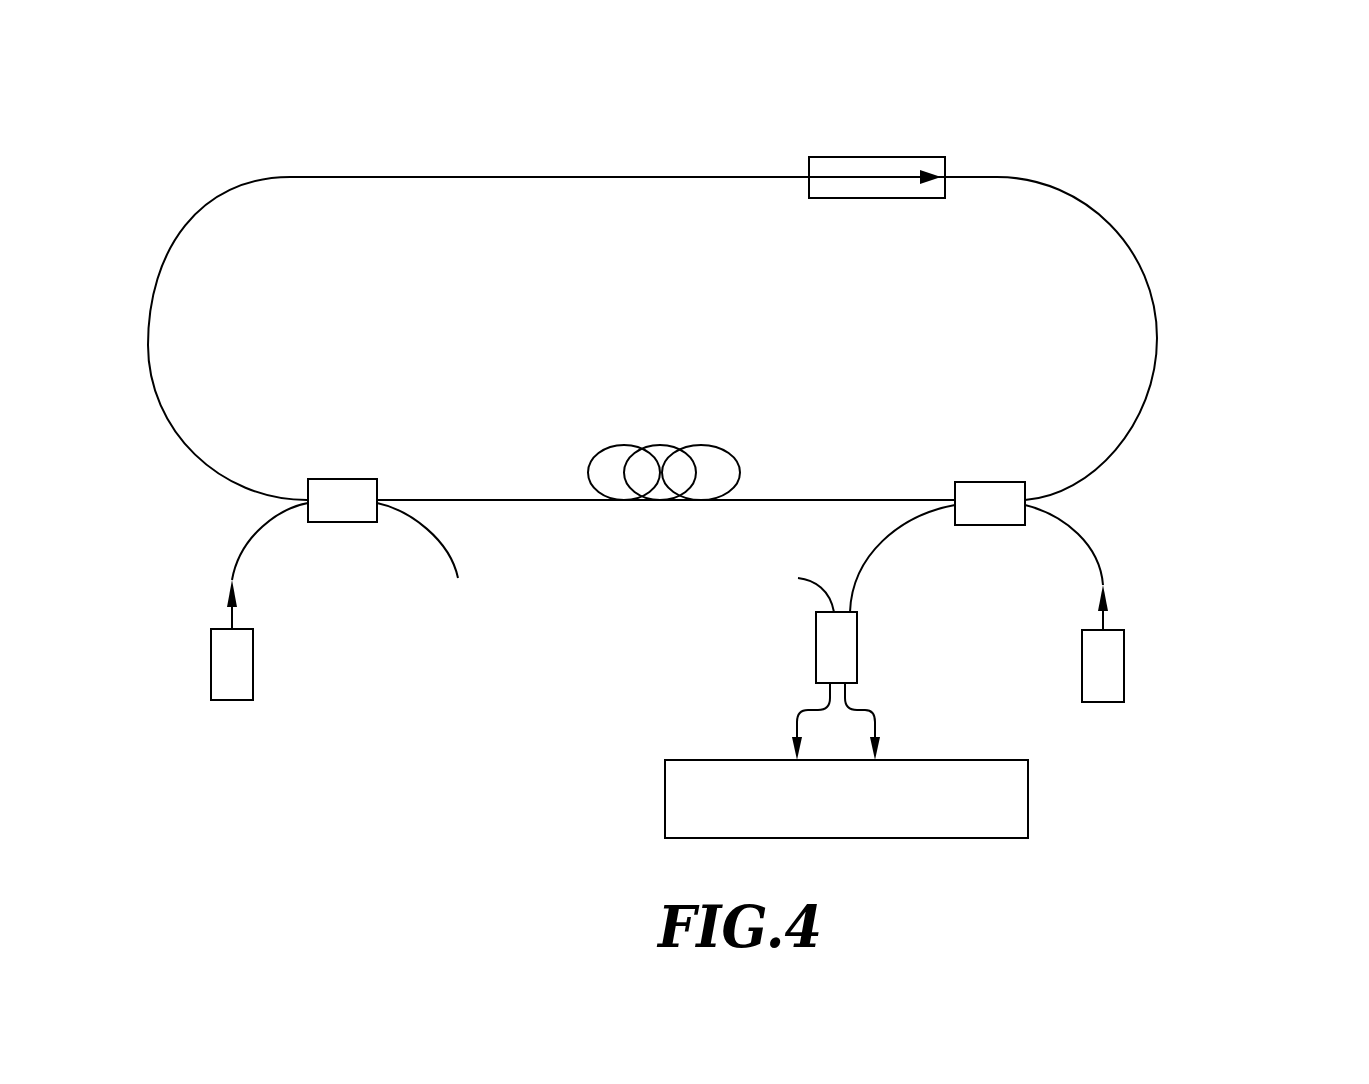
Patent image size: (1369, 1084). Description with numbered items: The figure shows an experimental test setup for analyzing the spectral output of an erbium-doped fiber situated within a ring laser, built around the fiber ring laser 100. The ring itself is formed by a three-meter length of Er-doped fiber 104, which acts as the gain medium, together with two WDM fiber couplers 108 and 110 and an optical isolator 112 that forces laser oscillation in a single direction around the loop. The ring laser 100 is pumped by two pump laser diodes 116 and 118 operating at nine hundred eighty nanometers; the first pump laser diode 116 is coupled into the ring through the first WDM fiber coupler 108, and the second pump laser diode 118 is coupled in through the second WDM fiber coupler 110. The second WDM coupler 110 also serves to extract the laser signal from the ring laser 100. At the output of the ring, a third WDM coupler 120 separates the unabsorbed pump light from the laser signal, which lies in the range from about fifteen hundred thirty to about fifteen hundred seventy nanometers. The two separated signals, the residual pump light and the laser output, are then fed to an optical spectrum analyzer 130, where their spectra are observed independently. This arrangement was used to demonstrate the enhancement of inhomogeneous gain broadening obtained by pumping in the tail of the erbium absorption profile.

The fiber ring laser 100 is at (735, 468).
The Er-doped fiber 104 is at (727, 451).
The first WDM fiber coupler 108 is at (343, 522).
The second WDM fiber coupler 110 is at (955, 483).
The optical isolator 112 is at (945, 163).
The pump laser diode 116 is at (253, 653).
The pump laser diode 118 is at (1125, 665).
The third WDM coupler 120 is at (858, 637).
The optical spectrum analyzer 130 is at (1028, 818).